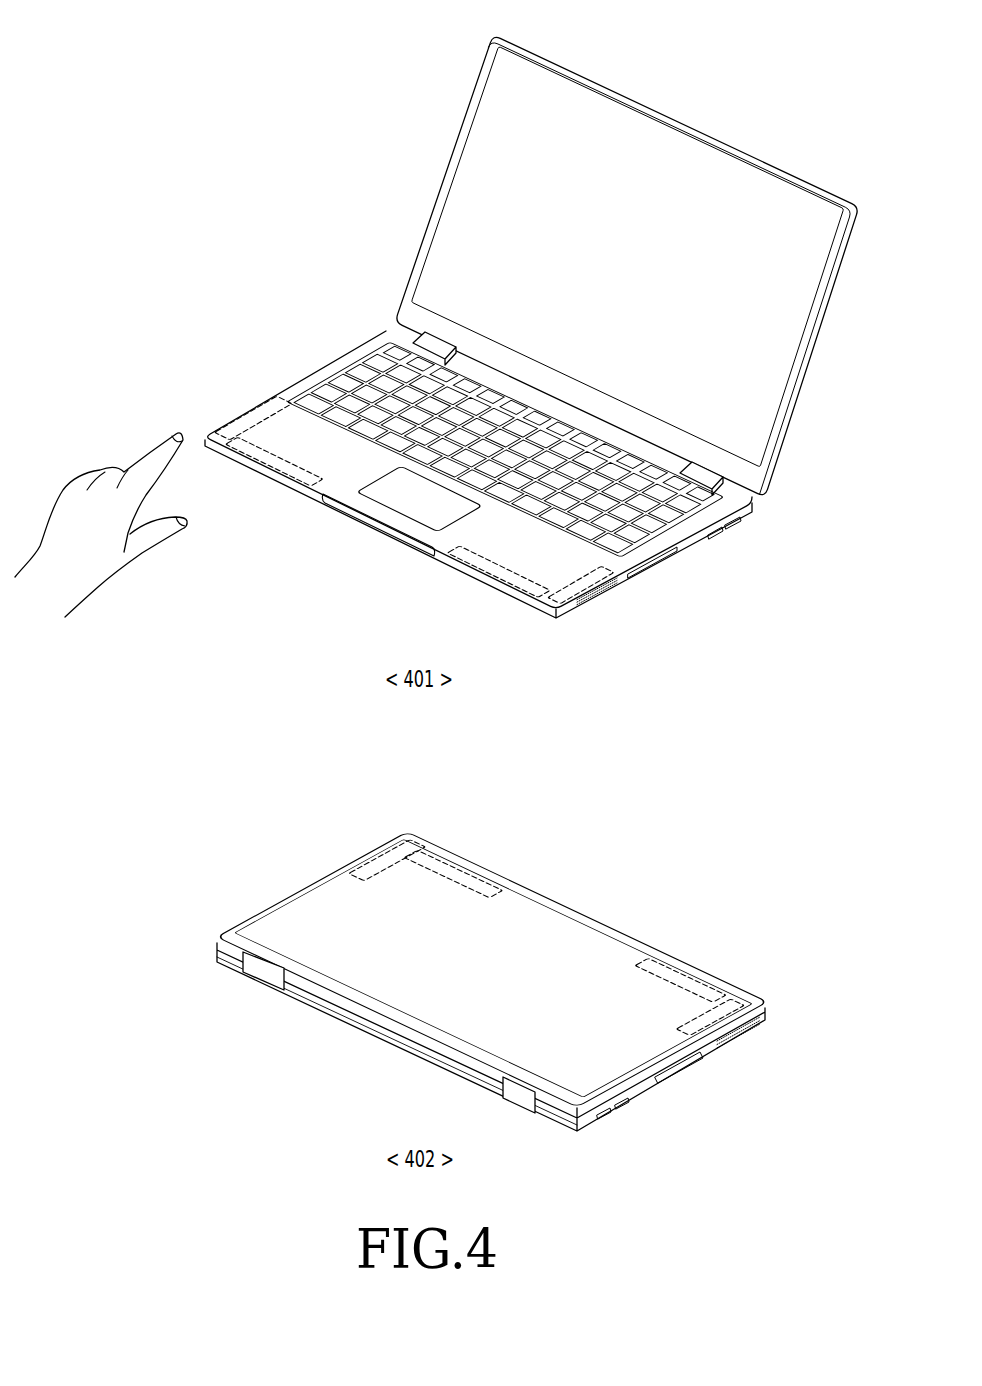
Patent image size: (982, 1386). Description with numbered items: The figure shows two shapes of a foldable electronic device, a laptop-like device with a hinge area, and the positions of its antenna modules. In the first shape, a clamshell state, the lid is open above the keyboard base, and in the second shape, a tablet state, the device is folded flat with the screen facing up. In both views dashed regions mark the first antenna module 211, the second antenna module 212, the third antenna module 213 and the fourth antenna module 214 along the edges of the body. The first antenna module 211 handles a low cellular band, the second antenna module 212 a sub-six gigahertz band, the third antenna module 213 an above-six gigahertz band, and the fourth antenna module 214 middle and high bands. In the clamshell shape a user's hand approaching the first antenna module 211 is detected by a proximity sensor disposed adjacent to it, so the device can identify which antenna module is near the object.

The first antenna module 211 is at (238, 412).
The second antenna module 212 is at (287, 470).
The third antenna module 213 is at (453, 572).
The fourth antenna module 214 is at (610, 600).